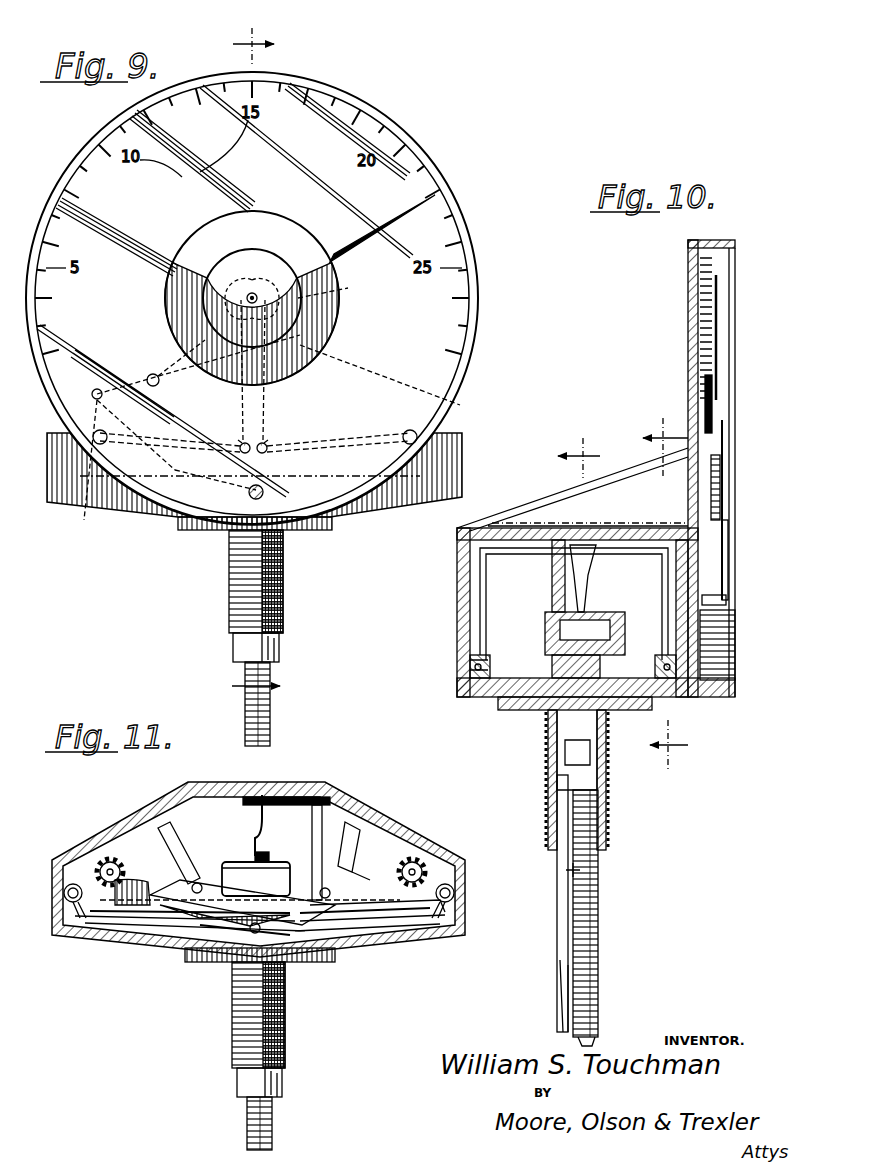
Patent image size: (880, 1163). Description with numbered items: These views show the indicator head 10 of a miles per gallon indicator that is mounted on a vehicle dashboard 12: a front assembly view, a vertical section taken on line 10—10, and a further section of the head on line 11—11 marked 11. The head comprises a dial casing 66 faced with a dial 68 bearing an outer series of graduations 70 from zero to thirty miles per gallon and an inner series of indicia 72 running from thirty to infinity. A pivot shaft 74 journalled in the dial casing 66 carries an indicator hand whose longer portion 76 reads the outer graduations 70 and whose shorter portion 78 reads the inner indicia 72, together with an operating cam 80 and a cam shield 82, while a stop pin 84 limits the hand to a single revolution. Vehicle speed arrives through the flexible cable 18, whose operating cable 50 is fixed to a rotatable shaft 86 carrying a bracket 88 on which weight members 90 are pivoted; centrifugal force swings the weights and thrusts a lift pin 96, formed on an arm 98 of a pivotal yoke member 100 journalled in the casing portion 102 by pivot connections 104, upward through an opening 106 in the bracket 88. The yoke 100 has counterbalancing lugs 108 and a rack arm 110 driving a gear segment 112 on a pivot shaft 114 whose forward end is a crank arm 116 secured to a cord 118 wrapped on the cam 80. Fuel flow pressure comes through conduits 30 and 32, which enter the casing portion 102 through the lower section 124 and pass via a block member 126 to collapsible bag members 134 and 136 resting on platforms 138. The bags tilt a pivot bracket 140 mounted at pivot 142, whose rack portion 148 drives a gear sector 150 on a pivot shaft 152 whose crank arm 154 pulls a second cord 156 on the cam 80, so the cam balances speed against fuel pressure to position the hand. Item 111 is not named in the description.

In FIG. 9, the indicator head 10 is at (241, 362).
In FIG. 10, the section line 11— 11 is at (674, 594).
In FIG. 10, the vehicle dashboard 12 is at (614, 868).
In FIG. 10, the flexible cable 18 is at (600, 957).
In FIG. 9, the conduit 30 is at (450, 412).
In FIG. 10, the conduit 30 is at (557, 942).
In FIG. 10, the conduit 32 is at (557, 1000).
In FIG. 10, the operating cable 50 is at (594, 1042).
In FIG. 9, the dial casing 66 is at (82, 157).
In FIG. 10, the dial casing 66 is at (688, 335).
In FIG. 9, the dial 68 is at (63, 204).
In FIG. 10, the dial 68 is at (737, 653).
In FIG. 9, the outer series of graduations 70 is at (225, 290).
In FIG. 9, the inner series of indicia 72 is at (206, 239).
In FIG. 10, the pivot shaft 74 is at (688, 470).
In FIG. 9, the longer portion of indicator hand 76 is at (362, 234).
In FIG. 10, the longer portion of indicator hand 76 is at (733, 324).
In FIG. 9, the shorter portion of indicator hand 78 is at (204, 325).
In FIG. 10, the shorter portion of indicator hand 78 is at (722, 547).
In FIG. 9, the operating cam 80 is at (335, 287).
In FIG. 10, the operating cam 80 is at (737, 458).
In FIG. 9, the cam shield 82 is at (298, 325).
In FIG. 10, the cam shield 82 is at (737, 508).
In FIG. 9, the stop pin 84 is at (152, 373).
In FIG. 10, the rotatable shaft 86 is at (604, 729).
In FIG. 10, the bracket 88 is at (540, 622).
In FIG. 11, the weight members 90 is at (177, 843).
In FIG. 10, the lift pin 96 is at (590, 598).
In FIG. 11, the lift pin 96 is at (255, 858).
In FIG. 11, the arm 98 is at (240, 797).
In FIG. 10, the pivotal yoke member 100 is at (480, 554).
In FIG. 11, the pivotal yoke member 100 is at (348, 797).
In FIG. 9, the casing portion 102 is at (450, 428).
In FIG. 10, the casing portion 102 is at (460, 585).
In FIG. 11, the casing portion 102 is at (118, 826).
In FIG. 11, the pivot connections 104 is at (317, 873).
In FIG. 10, the opening 106 is at (545, 638).
In FIG. 11, the counterbalancing lugs 108 is at (302, 950).
In FIG. 11, the rack arm 110 is at (367, 860).
In FIG. 10, the seal 111 is at (470, 663).
In FIG. 11, the gear segment 112 is at (409, 853).
In FIG. 9, the pivot shaft 114 is at (456, 450).
In FIG. 10, the pivot shaft 114 is at (650, 618).
In FIG. 11, the pivot shaft 114 is at (440, 860).
In FIG. 9, the crank arm 116 is at (310, 442).
In FIG. 10, the crank arm 116 is at (726, 612).
In FIG. 9, the cord 118 is at (270, 396).
In FIG. 10, the cord 118 is at (724, 578).
In FIG. 9, the lower section of casing 124 is at (365, 512).
In FIG. 10, the lower section of casing 124 is at (462, 692).
In FIG. 11, the lower section of casing 124 is at (67, 940).
In FIG. 10, the block member 126 is at (523, 710).
In FIG. 11, the collapsible bag member 134 is at (157, 943).
In FIG. 11, the collapsible bag member 136 is at (398, 947).
In FIG. 11, the platforms 138 is at (108, 927).
In FIG. 11, the pivot bracket 140 is at (215, 937).
In FIG. 11, the pivot 142 is at (223, 968).
In FIG. 11, the rack portion 148 is at (112, 856).
In FIG. 11, the gear sector 150 is at (103, 842).
In FIG. 9, the pivot shaft 152 is at (60, 534).
In FIG. 11, the pivot shaft 152 is at (76, 880).
In FIG. 9, the crank arm 154 is at (187, 482).
In FIG. 9, the cord 156 is at (240, 409).